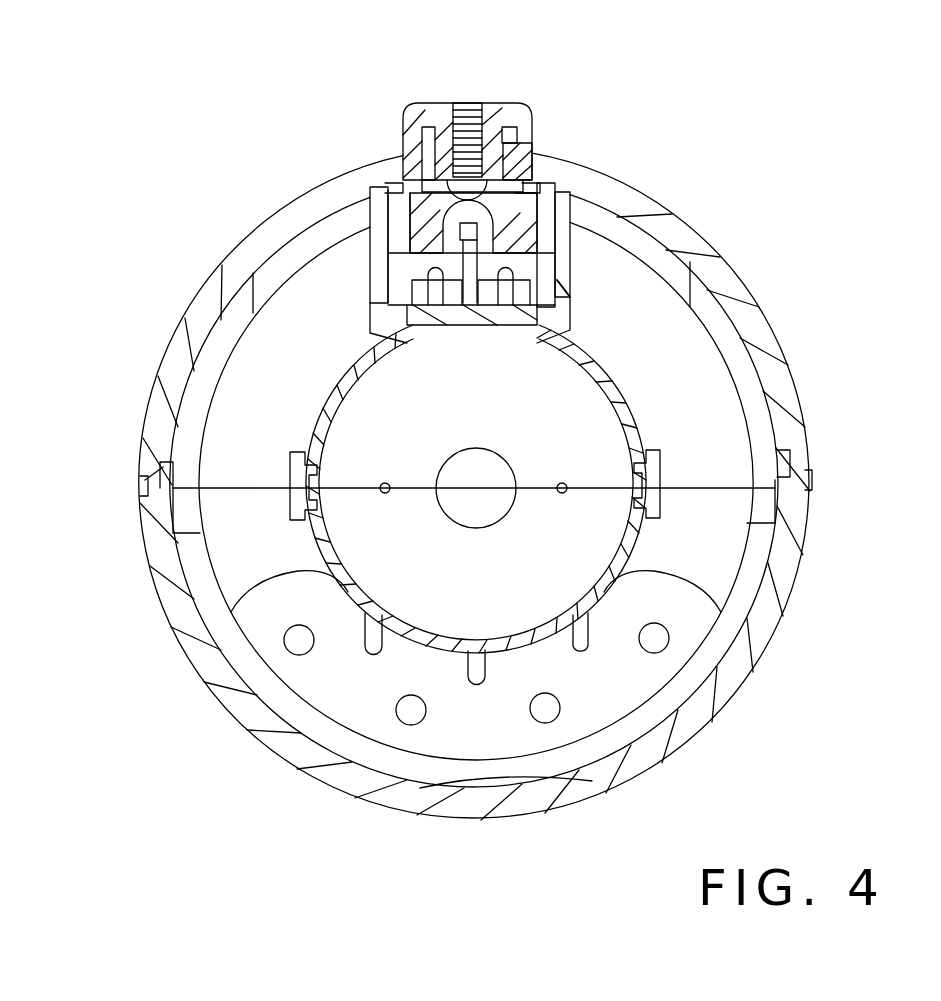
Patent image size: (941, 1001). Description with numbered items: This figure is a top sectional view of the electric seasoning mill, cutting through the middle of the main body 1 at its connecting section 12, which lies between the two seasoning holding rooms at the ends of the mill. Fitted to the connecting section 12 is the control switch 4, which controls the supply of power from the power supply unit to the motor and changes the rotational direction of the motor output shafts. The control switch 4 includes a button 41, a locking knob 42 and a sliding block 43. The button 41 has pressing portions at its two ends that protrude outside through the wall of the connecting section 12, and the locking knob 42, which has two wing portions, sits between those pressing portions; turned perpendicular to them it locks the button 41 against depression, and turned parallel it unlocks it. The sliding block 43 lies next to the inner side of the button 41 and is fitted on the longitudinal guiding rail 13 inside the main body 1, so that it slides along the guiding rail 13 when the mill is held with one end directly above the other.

The main body 1 is at (803, 553).
The connecting section 12 is at (787, 403).
The longitudinal guiding rail 13 is at (572, 276).
The control switch 4 is at (533, 108).
The button 41 is at (403, 155).
The locking knob 42 is at (470, 103).
The sliding block 43 is at (535, 188).